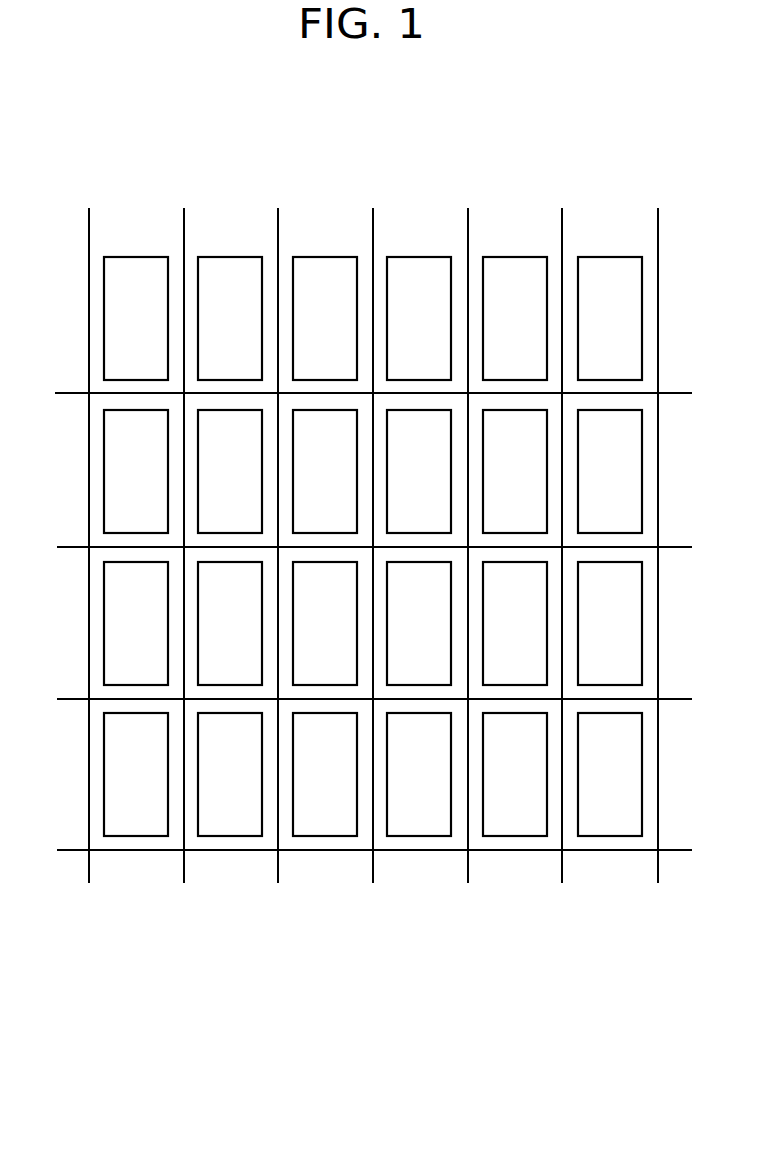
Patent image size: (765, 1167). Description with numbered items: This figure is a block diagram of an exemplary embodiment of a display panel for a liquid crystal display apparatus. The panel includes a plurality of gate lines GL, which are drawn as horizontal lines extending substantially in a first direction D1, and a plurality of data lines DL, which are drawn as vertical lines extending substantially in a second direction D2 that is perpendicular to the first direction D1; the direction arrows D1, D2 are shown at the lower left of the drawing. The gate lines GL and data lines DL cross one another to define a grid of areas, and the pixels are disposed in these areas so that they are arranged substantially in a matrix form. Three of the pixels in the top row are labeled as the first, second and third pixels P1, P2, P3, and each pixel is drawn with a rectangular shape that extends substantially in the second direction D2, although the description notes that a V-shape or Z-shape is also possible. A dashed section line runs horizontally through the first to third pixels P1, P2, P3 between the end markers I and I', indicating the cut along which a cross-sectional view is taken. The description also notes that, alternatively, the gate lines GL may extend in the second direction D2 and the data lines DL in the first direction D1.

The data line DL is at (367, 534).
The gate line GL is at (359, 617).
The first pixel P1 is at (136, 318).
The second pixel P2 is at (230, 318).
The third pixel P3 is at (325, 318).
The section line start I is at (225, 317).
The section line end I' is at (344, 316).
The first direction D1 is at (93, 1007).
The second direction D2 is at (93, 1007).